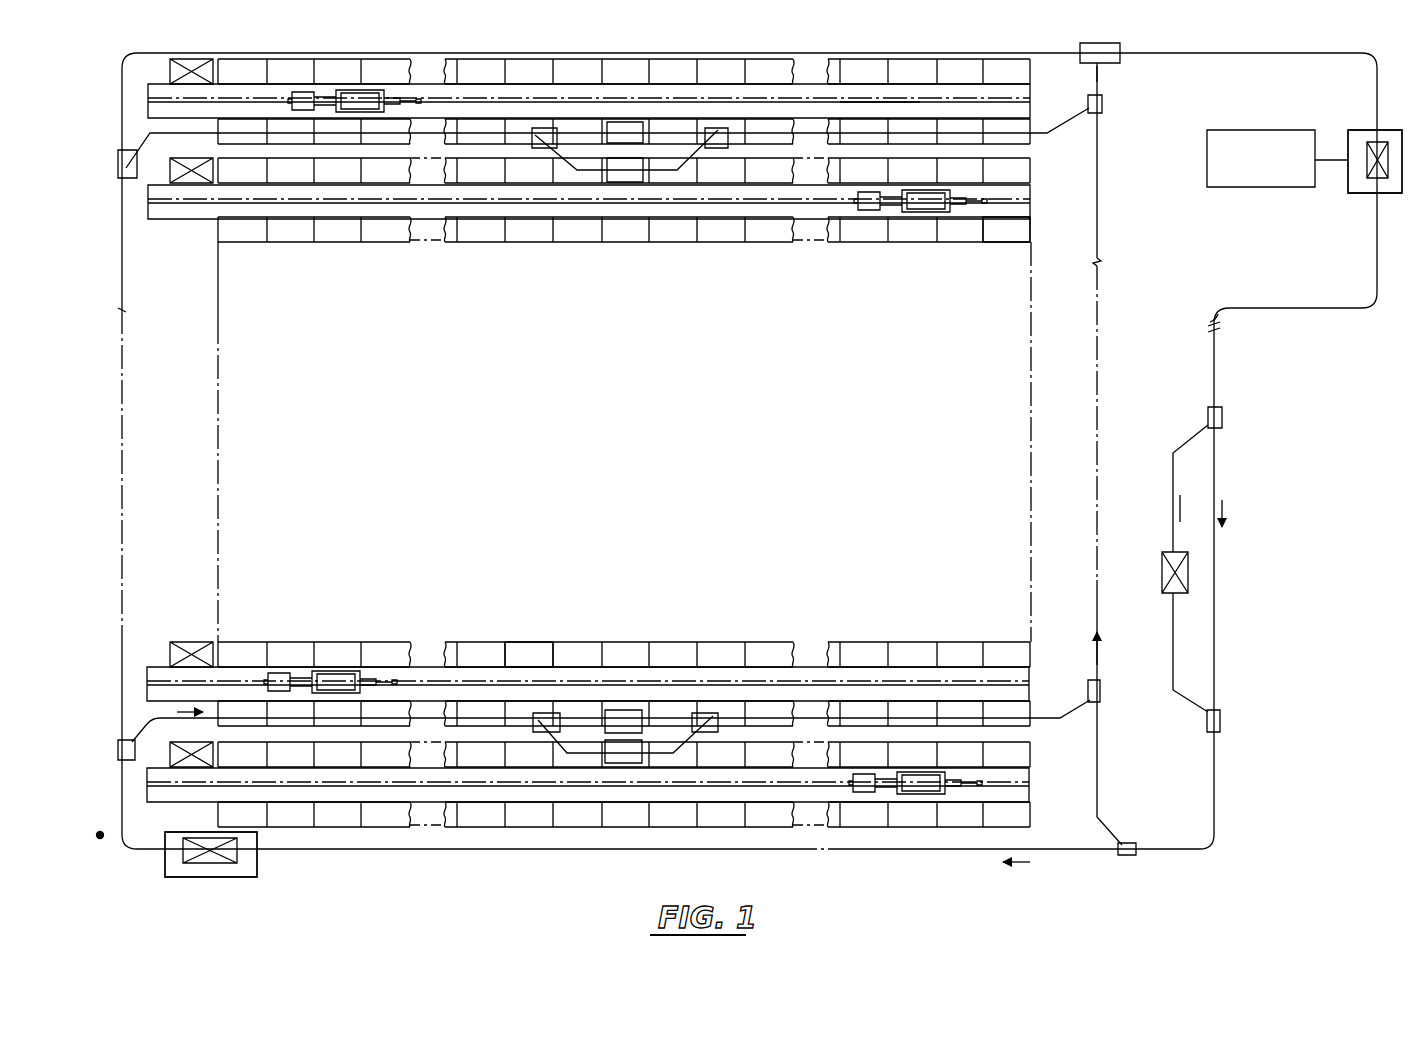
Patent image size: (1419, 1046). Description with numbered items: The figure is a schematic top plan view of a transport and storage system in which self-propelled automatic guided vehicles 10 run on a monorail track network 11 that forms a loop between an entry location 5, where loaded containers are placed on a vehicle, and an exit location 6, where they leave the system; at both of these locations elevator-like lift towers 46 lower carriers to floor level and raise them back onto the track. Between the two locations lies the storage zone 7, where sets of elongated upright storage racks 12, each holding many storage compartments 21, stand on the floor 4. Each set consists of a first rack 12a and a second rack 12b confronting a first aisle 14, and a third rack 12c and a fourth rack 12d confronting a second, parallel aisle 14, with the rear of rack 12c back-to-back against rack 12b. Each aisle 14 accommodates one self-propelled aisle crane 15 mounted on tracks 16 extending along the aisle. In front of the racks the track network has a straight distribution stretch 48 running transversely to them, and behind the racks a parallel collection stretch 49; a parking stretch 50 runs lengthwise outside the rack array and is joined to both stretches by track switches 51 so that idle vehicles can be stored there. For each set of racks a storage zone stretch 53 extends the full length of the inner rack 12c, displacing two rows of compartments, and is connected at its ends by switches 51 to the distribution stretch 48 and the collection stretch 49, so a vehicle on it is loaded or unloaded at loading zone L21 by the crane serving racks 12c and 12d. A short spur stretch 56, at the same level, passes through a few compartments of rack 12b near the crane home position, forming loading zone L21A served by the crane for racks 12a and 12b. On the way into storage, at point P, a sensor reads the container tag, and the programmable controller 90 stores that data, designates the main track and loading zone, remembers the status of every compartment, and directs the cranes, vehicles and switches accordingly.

The floor 4 is at (1072, 212).
The entry location 5 is at (237, 882).
The exit location 6 is at (1397, 127).
The storage zone 7 is at (1034, 388).
The automatic guided vehicle 10 is at (1367, 142).
The track network 11 is at (1218, 790).
The storage rack 12 is at (630, 446).
The first rack 12a is at (1030, 232).
The second rack 12b is at (1030, 178).
The third rack 12c is at (1030, 118).
The fourth rack 12d is at (1030, 83).
The aisle 14 is at (272, 88).
The aisle crane 15 is at (355, 88).
The track 16 is at (893, 99).
The storage compartment 21 is at (562, 642).
The lift tower 46 is at (1358, 193).
The distribution stretch 48 is at (122, 633).
The collection stretch 49 is at (1097, 620).
The parking stretch 50 is at (1173, 480).
The track switch 51 is at (1107, 63).
The storage zone stretch 53 is at (948, 142).
The spur stretch 56 is at (580, 172).
The programmable controller 90 is at (1265, 187).
The storage zone L21 is at (632, 122).
The storage zone L21A is at (625, 183).
The point P is at (100, 832).